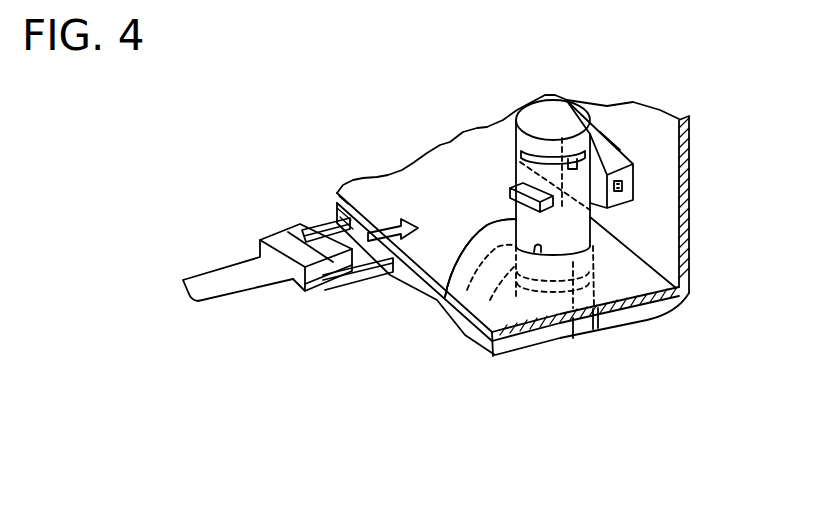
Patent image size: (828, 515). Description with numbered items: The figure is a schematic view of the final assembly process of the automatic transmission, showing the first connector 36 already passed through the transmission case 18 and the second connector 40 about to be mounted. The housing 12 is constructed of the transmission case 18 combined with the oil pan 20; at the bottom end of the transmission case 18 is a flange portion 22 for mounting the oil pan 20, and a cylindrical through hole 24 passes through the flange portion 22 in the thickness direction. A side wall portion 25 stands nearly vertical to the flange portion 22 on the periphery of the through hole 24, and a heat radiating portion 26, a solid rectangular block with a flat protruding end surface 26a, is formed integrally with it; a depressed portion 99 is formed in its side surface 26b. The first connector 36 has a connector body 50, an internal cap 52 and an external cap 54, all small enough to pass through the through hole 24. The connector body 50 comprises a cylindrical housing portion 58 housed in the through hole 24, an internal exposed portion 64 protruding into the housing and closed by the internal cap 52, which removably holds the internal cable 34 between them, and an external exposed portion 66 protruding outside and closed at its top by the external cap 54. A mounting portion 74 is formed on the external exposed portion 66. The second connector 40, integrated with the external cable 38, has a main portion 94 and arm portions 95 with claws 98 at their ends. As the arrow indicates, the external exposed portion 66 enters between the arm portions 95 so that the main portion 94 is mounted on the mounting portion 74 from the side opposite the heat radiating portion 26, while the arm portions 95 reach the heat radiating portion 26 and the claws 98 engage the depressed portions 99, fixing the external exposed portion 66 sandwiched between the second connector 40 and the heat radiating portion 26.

The housing 12 is at (364, 46).
The transmission case 18 is at (443, 146).
The oil pan 20 is at (378, 221).
The flange portion 22 is at (647, 308).
The through hole 24 is at (537, 255).
The side wall portion 25 is at (688, 212).
The heat radiating portion 26 is at (621, 138).
The protruding end surface 26a is at (590, 205).
The side surface 26b is at (630, 174).
The internal cable 34 is at (605, 330).
The first connector 36 is at (570, 96).
The external cable 38 is at (209, 258).
The second connector 40 is at (279, 224).
The connector body 50 is at (478, 437).
The internal cap 52 is at (557, 300).
The external cap 54 is at (602, 132).
The housing portion 58 is at (467, 290).
The internal exposed portion 64 is at (490, 300).
The external exposed portion 66 is at (445, 297).
The mounting portion 74 is at (513, 187).
The main portion 94 is at (317, 292).
The arm portions 95 is at (284, 222).
The claws 98 is at (346, 191).
The depressed portions 99 is at (623, 185).